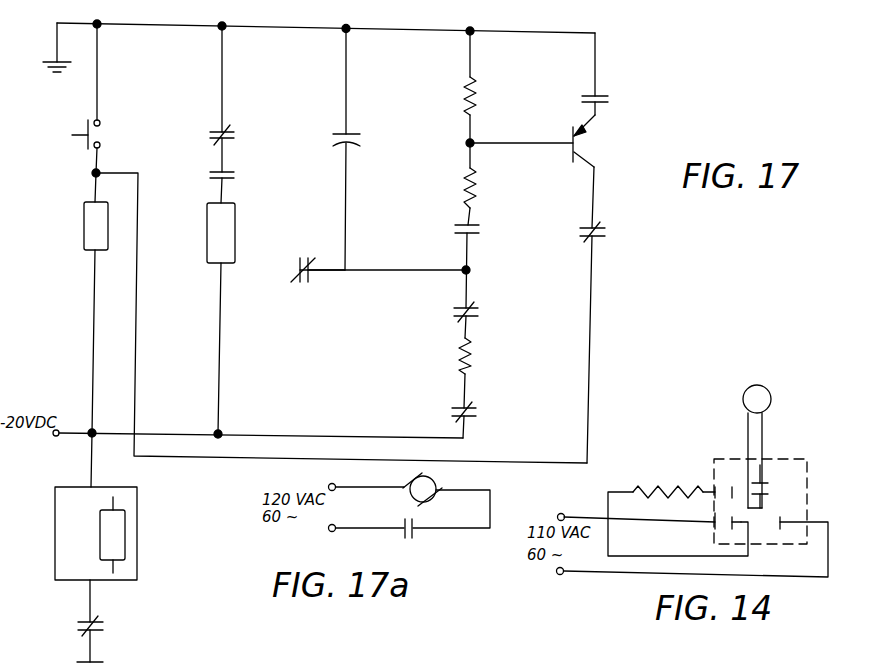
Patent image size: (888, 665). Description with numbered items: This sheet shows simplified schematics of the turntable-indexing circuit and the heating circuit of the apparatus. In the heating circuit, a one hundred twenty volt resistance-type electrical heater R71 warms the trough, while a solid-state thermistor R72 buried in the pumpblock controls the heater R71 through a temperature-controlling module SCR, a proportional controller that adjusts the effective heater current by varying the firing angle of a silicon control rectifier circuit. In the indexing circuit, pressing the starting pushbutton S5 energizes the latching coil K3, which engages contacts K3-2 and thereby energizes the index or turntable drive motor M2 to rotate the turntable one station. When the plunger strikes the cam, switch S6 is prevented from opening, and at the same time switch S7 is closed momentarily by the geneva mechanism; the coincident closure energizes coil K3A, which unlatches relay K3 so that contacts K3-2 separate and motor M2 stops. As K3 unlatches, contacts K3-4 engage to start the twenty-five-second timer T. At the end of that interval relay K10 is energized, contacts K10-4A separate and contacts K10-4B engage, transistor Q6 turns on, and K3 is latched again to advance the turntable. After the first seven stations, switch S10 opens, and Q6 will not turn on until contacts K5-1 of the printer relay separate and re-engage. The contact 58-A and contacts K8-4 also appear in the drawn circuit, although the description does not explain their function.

In FIG. 17, the starting pushbutton S5 is at (100, 134).
In FIG. 17, the switch S6 is at (238, 134).
In FIG. 17, the switch S7 is at (238, 175).
In FIG. 17, the latching coil K3 is at (96, 226).
In FIG. 17, the coil K3A is at (221, 233).
In FIG. 17, the 25-second timer T is at (137, 570).
In FIG. 17, the relay K10 is at (112, 535).
In FIG. 17, the contacts K3-4 is at (117, 629).
In FIG. 17, the contacts K5-1 is at (346, 283).
In FIG. 17, the contacts K10-4B is at (498, 218).
In FIG. 17, the contacts K10-4A is at (500, 313).
In FIG. 17, the switch S10 is at (485, 413).
In FIG. 17, the transistor Q6 is at (600, 141).
In FIG. 17, the switch contact 58-A is at (621, 93).
In FIG. 17, the relay contact K8-4 is at (596, 228).
In FIG. 17A, the index or turntable drive motor M2 is at (411, 493).
In FIG. 17A, the contacts K3-2 is at (429, 540).
In FIG. 14, the resistance-type electrical heater R71 is at (676, 489).
In FIG. 14, the solid-state thermistor R72 is at (778, 446).
In FIG. 14, the temperature-controlling module SCR is at (808, 503).